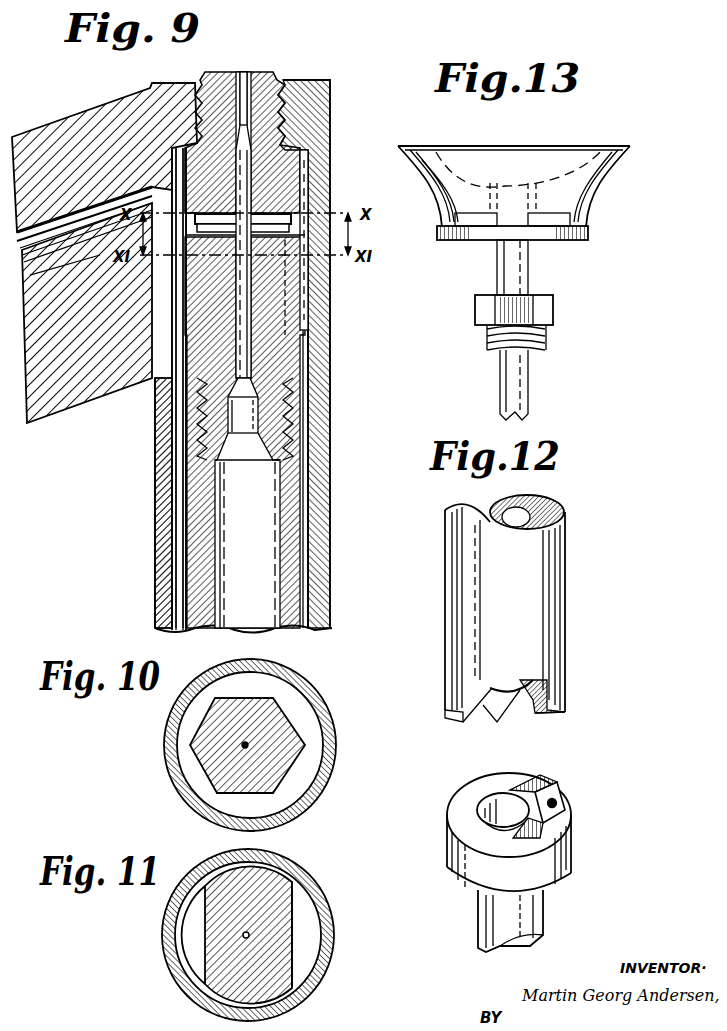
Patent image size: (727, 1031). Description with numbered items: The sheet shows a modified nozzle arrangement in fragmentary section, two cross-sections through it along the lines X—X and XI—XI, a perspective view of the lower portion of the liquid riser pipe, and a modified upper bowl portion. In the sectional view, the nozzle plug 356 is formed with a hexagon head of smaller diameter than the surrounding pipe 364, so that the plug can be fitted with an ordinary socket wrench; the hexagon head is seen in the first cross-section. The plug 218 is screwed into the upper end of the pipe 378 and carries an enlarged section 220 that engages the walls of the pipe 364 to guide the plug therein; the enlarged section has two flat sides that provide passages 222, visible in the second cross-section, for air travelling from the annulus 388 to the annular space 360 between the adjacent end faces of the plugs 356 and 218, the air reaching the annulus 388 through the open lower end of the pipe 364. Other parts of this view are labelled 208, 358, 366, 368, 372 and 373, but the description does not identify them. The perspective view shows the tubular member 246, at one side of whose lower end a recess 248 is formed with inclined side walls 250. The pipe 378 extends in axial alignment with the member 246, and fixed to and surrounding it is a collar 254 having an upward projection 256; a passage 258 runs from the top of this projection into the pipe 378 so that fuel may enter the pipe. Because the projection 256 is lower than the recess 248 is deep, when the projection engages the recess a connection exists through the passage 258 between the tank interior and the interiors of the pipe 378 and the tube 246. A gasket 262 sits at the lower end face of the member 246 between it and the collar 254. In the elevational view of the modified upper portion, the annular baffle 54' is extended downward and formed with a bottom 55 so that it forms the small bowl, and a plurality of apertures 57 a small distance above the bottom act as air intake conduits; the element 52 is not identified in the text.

In FIG. 13, the cup 52 is at (565, 150).
In FIG. 13, the annular baffle 54' is at (528, 191).
In FIG. 13, the bottom 55 is at (565, 242).
In FIG. 13, the apertures 57 is at (540, 220).
In FIG. 9, the housing block 208 is at (50, 398).
In FIG. 10, the housing block 208 is at (172, 725).
In FIG. 9, the plug 218 is at (185, 438).
In FIG. 9, the enlarged section 220 is at (205, 358).
In FIG. 11, the enlarged section 220 is at (225, 902).
In FIG. 11, the passages 222 is at (195, 948).
In FIG. 12, the tubular member 246 is at (565, 575).
In FIG. 12, the recess 248 is at (515, 708).
In FIG. 12, the side walls 250 is at (478, 722).
In FIG. 12, the collar 254 is at (450, 848).
In FIG. 12, the upward projection 256 is at (556, 785).
In FIG. 12, the passage 258 is at (558, 805).
In FIG. 12, the gasket 262 is at (447, 663).
In FIG. 9, the nozzle plug 356 is at (268, 108).
In FIG. 10, the nozzle plug 356 is at (262, 710).
In FIG. 9, the body 358 is at (325, 92).
In FIG. 9, the annular space 360 is at (300, 231).
In FIG. 9, the pipe 364 is at (318, 380).
In FIG. 11, the pipe 364 is at (318, 903).
In FIG. 9, the pin 366 is at (250, 165).
In FIG. 10, the pin 366 is at (243, 746).
In FIG. 9, the pin stem 368 is at (240, 118).
In FIG. 11, the hole 372 is at (243, 934).
In FIG. 9, the needle 373 is at (250, 338).
In FIG. 9, the pipe 378 is at (292, 482).
In FIG. 12, the pipe 378 is at (545, 912).
In FIG. 9, the annulus 388 is at (178, 522).